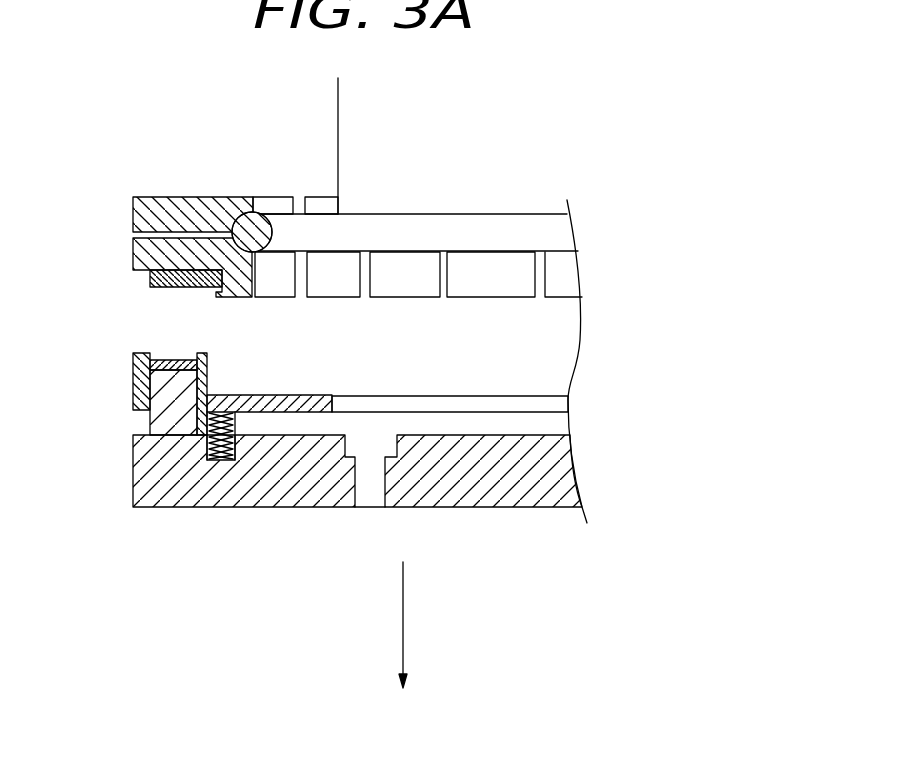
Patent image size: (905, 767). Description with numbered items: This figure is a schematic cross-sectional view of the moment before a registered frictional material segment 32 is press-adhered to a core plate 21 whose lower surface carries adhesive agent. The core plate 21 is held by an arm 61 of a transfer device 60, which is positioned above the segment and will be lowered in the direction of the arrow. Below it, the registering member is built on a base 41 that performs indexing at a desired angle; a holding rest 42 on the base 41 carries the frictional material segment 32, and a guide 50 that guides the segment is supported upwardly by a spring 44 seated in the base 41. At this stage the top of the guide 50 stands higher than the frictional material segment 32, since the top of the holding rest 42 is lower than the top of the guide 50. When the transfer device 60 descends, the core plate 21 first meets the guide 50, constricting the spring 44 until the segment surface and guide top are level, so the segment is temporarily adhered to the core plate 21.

The transfer device 60 is at (481, 123).
The arm 61 is at (143, 251).
The core plate 21 is at (146, 277).
The frictional material segment 32 is at (173, 359).
The holding rest 42 is at (158, 425).
The guide 50 is at (279, 394).
The spring 44 is at (217, 461).
The base 41 is at (502, 490).